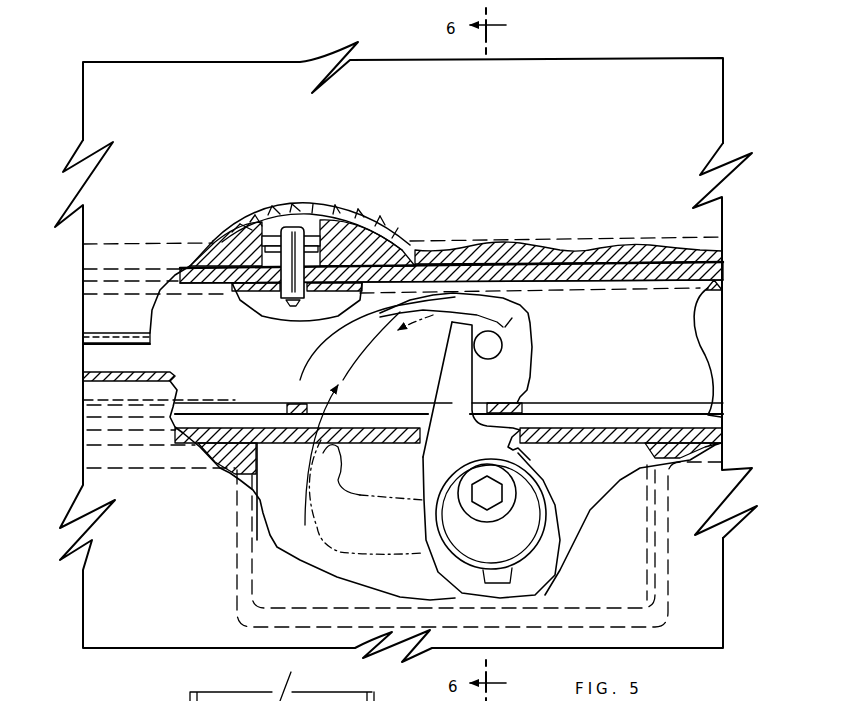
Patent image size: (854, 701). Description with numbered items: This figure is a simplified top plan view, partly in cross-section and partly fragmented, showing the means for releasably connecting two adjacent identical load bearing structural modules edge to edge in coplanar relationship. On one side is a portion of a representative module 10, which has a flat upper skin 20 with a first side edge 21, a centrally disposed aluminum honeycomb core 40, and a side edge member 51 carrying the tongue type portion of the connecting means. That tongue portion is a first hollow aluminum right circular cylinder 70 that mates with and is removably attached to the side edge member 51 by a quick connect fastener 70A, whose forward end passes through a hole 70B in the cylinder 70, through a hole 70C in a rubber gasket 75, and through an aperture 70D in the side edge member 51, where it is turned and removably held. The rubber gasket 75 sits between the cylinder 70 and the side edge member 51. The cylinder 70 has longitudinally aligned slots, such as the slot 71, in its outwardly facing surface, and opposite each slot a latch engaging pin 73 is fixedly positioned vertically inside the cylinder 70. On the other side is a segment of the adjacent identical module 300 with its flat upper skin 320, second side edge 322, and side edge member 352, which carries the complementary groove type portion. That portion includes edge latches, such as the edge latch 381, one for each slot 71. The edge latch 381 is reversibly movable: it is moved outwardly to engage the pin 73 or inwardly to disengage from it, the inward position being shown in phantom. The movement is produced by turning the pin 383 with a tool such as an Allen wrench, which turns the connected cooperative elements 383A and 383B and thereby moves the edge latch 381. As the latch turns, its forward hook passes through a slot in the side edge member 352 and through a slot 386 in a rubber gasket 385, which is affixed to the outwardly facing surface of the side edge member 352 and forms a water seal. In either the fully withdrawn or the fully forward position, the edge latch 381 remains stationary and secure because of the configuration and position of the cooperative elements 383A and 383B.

The module 10 is at (508, 50).
The flat upper skin 20 is at (193, 111).
The first side edge 21 is at (87, 333).
The aluminum honeycomb core 40 is at (328, 212).
The side edge member 51 is at (367, 252).
The hollow aluminum right circular cylinder 70 is at (92, 359).
The quick connect fastener 70A is at (292, 226).
The hole 70B is at (264, 311).
The hole 70C is at (271, 249).
The aperture 70D is at (250, 228).
The slot 71 is at (300, 404).
The latch engaging pin 73 is at (495, 347).
The rubber gasket 75 is at (447, 246).
The module 300 is at (76, 606).
The flat upper skin 320 is at (185, 600).
The second side edge 322 is at (112, 380).
The side edge member 352 is at (225, 457).
The edge latch 381 is at (497, 321).
The pin 383 is at (492, 491).
The cooperative element 383A is at (525, 530).
The cooperative element 383B is at (442, 452).
The rubber gasket 385 is at (723, 437).
The slot 386 is at (258, 446).